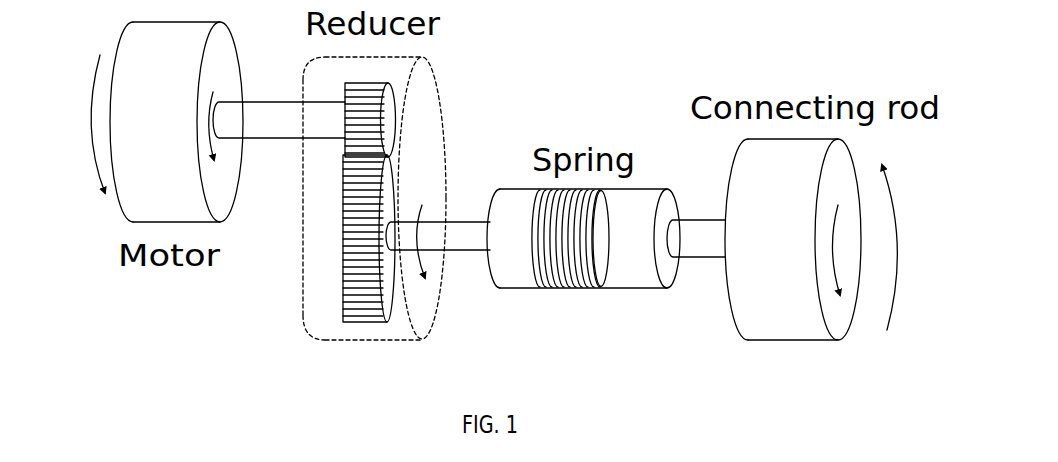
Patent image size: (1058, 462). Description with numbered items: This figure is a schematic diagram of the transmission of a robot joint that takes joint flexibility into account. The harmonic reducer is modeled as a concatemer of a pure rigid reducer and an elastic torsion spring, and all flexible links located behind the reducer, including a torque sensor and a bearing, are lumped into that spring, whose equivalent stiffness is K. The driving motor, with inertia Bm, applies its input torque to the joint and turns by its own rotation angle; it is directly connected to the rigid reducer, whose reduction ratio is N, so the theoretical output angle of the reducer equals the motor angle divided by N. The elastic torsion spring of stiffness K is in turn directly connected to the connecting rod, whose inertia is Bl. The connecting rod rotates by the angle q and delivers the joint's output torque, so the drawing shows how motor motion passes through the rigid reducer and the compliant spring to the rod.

The inertia of the driving motor Bm is at (176, 122).
The reduction ratio of the rigid reducer N is at (396, 198).
The equivalent stiffness K is at (583, 262).
The inertia of the connecting rod Bl is at (793, 239).
The rotation angle of the connecting rod q is at (837, 231).